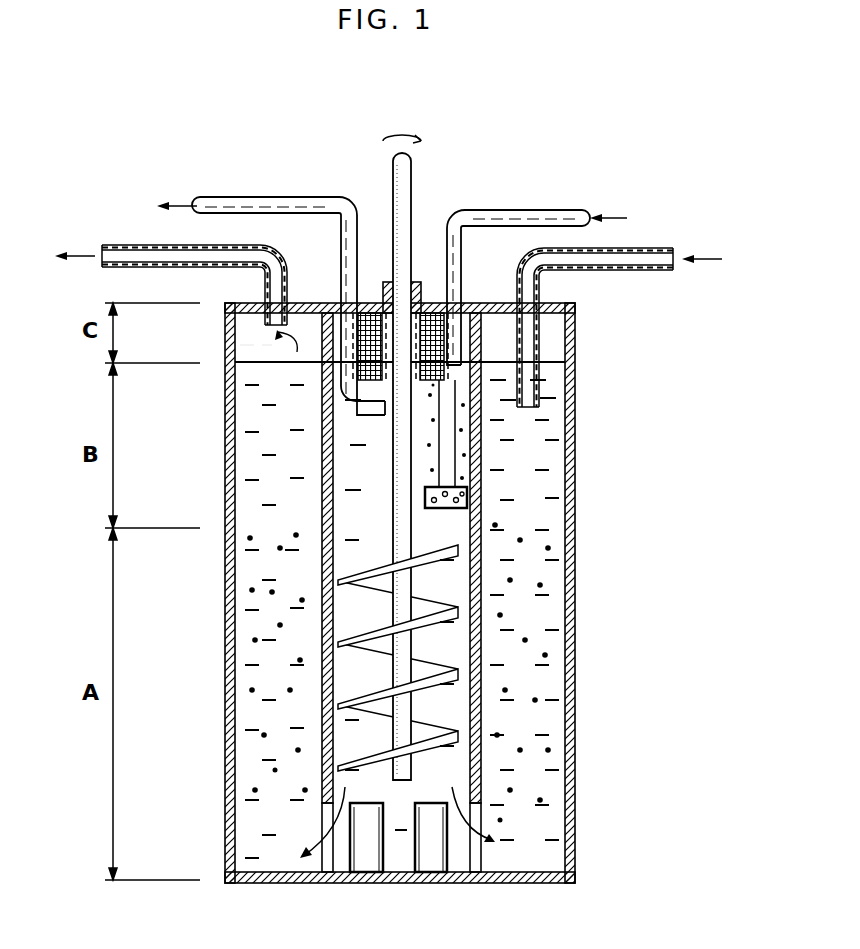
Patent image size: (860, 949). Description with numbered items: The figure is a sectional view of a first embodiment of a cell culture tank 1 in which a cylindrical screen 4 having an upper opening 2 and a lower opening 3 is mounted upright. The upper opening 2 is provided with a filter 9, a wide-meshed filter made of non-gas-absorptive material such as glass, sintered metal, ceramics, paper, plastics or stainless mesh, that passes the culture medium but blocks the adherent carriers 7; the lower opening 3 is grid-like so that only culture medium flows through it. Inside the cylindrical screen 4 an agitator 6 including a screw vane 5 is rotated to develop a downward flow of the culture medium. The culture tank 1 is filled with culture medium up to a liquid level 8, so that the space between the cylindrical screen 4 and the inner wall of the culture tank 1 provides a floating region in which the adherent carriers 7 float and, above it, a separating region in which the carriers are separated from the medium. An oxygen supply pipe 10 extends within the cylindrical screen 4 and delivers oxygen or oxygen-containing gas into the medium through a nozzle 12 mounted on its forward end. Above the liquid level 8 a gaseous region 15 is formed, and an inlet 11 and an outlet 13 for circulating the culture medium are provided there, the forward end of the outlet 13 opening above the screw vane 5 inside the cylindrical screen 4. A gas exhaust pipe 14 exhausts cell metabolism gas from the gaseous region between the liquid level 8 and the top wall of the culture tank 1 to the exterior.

The cell culture tank 1 is at (568, 805).
The upper opening 2 is at (483, 332).
The lower opening 3 is at (505, 855).
The cylindrical screen 4 is at (482, 720).
The screw vane 5 is at (453, 655).
The agitator 6 is at (402, 588).
The adherent carriers 7 is at (552, 746).
The liquid level 8 is at (298, 358).
The filter 9 is at (483, 347).
The oxygen supply pipe 10 is at (520, 214).
The inlet 11 is at (657, 249).
The nozzle 12 is at (467, 502).
The outlet 13 is at (262, 200).
The gas exhaust pipe 14 is at (118, 246).
The gaseous region 15 is at (248, 338).